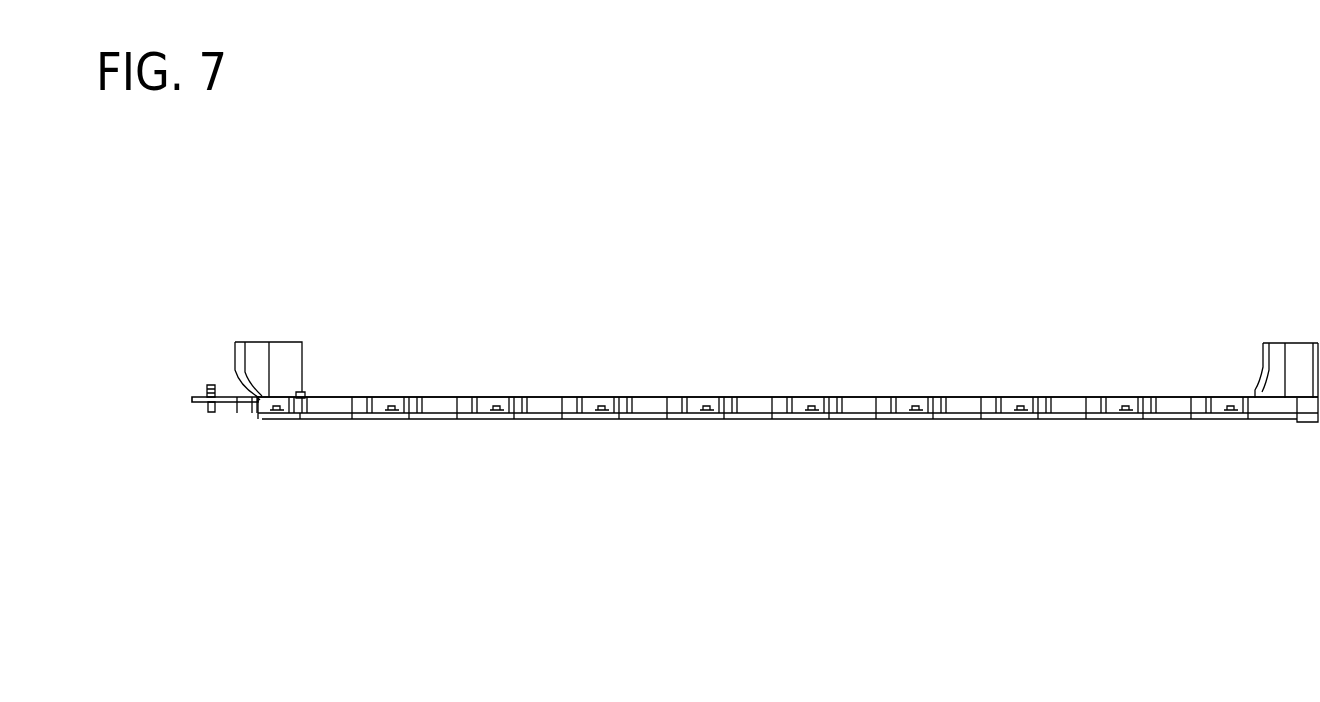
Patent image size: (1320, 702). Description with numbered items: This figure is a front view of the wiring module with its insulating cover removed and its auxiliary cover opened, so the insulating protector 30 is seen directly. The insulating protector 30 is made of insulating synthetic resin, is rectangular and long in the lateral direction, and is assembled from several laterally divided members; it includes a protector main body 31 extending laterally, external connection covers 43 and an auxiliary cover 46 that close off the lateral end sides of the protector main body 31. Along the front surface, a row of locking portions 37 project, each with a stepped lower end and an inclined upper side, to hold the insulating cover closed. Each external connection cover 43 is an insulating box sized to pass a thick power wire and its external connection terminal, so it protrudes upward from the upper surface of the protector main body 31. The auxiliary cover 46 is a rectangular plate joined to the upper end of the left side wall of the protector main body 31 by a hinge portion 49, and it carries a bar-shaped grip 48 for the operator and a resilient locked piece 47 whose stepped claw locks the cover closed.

The insulating protector 30 is at (731, 492).
The protector main body 31 is at (646, 403).
The locking portion 37 is at (389, 397).
The external connection cover 43 is at (266, 342).
The auxiliary cover 46 is at (203, 426).
The resilient locked piece 47 is at (212, 384).
The grip 48 is at (211, 412).
The hinge portion 49 is at (258, 399).